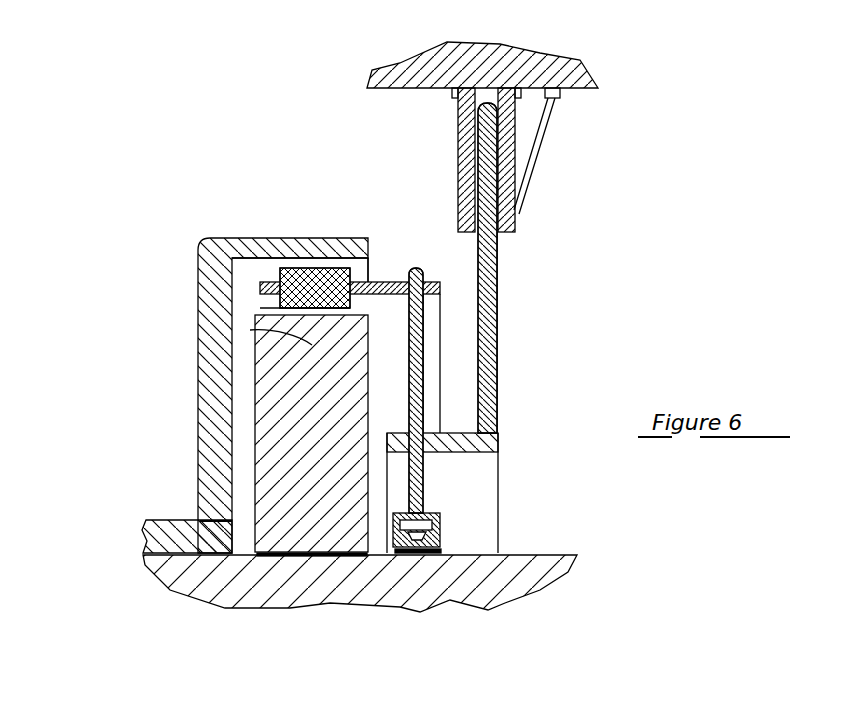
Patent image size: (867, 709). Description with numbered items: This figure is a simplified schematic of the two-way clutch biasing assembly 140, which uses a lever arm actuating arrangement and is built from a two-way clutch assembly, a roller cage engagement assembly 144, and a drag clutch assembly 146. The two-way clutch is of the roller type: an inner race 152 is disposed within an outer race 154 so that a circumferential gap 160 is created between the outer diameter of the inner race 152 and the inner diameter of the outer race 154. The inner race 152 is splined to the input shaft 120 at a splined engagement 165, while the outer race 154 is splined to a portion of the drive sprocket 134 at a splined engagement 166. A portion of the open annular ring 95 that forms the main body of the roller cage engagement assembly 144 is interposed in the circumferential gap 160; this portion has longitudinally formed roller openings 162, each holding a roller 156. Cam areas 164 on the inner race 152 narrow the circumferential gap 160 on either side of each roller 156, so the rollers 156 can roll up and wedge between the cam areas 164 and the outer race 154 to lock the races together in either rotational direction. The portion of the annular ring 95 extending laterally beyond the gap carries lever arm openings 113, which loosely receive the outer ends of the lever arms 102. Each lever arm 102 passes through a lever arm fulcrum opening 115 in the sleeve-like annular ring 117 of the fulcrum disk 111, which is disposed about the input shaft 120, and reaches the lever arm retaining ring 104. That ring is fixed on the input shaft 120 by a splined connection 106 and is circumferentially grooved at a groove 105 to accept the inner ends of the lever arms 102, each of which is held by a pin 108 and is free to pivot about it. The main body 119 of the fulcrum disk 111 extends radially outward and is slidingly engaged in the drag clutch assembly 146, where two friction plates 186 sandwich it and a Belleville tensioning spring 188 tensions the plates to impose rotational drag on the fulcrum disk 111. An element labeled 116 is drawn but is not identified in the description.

The open annular ring 95 is at (388, 278).
The lever arm 102 is at (425, 330).
The lever arm retaining ring 104 is at (442, 517).
The circumferential groove 105 is at (425, 513).
The splined connection 106 is at (410, 556).
The pin 108 is at (432, 527).
The fulcrum disk 111 is at (529, 435).
The lever arm opening 113 is at (428, 271).
The lever arm fulcrum opening 115 is at (397, 433).
The drive plate 116 is at (526, 52).
The annular ring of the fulcrum disk 117 is at (465, 433).
The main body of the fulcrum disk 119 is at (498, 320).
The input shaft 120 is at (364, 592).
The drive sprocket 134 is at (145, 537).
The two-way clutch biasing assembly 140 is at (297, 386).
The roller cage engagement assembly 144 is at (434, 350).
The drag clutch assembly 146 is at (492, 222).
The inner race 152 is at (324, 453).
The outer race 154 is at (197, 387).
The roller 156 is at (318, 283).
The circumferential gap 160 is at (248, 278).
The roller opening 162 is at (282, 308).
The cam area 164 is at (250, 330).
The splined engagement 165 is at (278, 557).
The splined engagement 166 is at (217, 520).
The friction plate 186 is at (460, 175).
The Belleville tensioning spring 188 is at (530, 145).